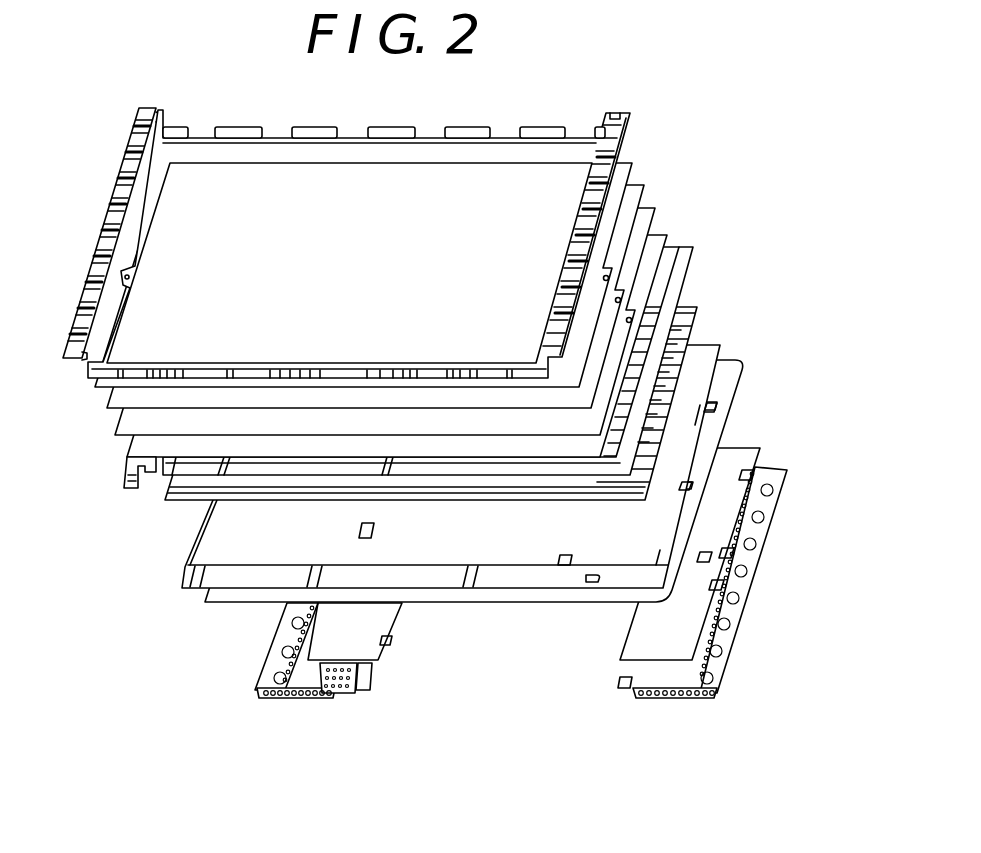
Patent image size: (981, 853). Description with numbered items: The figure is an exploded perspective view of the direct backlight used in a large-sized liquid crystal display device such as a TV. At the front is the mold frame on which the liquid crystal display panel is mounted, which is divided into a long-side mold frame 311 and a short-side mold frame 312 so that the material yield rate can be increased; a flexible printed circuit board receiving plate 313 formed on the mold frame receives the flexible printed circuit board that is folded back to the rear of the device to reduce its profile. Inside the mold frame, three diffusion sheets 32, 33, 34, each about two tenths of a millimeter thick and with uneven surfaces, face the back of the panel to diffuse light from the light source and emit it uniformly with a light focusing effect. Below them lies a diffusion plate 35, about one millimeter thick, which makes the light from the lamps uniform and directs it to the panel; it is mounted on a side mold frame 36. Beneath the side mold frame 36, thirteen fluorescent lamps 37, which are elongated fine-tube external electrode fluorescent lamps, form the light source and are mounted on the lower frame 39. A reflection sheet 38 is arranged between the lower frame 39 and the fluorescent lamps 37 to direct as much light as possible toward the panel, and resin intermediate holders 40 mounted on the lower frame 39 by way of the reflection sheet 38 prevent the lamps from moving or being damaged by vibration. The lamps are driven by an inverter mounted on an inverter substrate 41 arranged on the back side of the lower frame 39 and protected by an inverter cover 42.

The long-side mold frame 311 is at (508, 129).
The short-side mold frame 312 is at (102, 224).
The flexible printed circuit board receiving plate 313 is at (466, 127).
The diffusion sheet 32 is at (633, 168).
The diffusion sheet 33 is at (645, 195).
The diffusion sheet 34 is at (653, 217).
The diffusion plate 35 is at (667, 240).
The side mold frame 36 is at (692, 262).
The fluorescent lamp 37 is at (680, 312).
The reflection sheet 38 is at (720, 347).
The lower frame 39 is at (742, 410).
The intermediate holder 40 is at (360, 528).
The inverter substrate 41 is at (760, 458).
The inverter cover 42 is at (764, 598).